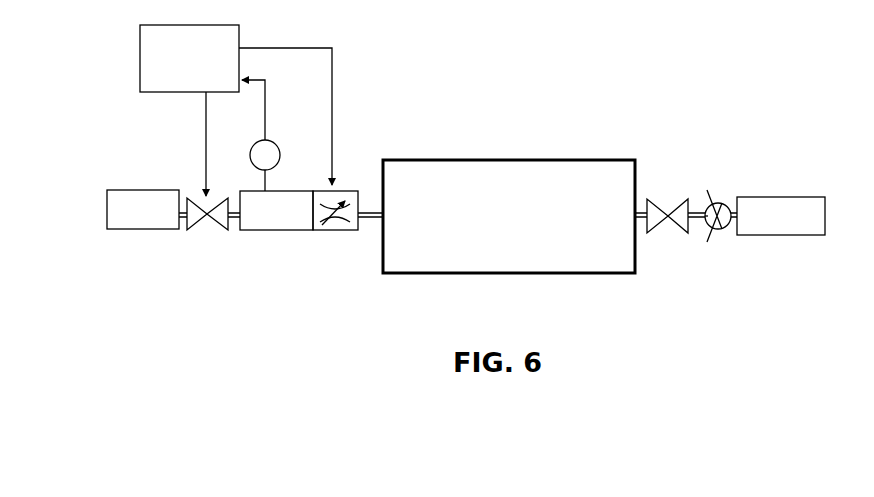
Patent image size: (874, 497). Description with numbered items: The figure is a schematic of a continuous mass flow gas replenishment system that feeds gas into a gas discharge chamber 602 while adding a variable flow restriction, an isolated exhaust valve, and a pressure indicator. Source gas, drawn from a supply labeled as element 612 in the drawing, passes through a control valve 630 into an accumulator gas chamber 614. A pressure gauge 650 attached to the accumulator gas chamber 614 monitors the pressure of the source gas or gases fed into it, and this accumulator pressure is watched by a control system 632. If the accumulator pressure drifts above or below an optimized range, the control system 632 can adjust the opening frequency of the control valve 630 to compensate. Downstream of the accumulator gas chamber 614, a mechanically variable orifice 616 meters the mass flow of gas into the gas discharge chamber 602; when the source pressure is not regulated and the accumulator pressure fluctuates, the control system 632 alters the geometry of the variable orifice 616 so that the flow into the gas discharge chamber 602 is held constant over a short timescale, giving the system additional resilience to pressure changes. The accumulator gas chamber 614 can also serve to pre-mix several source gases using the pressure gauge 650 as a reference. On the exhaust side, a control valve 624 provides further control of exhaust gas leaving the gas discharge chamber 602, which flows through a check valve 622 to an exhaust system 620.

The gas discharge chamber 602 is at (476, 160).
The gas source 612 is at (136, 190).
The accumulator gas chamber 614 is at (301, 190).
The mechanically variable orifice 616 is at (352, 190).
The exhaust system 620 is at (782, 197).
The check valve 622 is at (722, 201).
The control valve (exhaust side) 624 is at (672, 198).
The control valve 630 is at (190, 231).
The control system 632 is at (140, 58).
The pressure gauge 650 is at (277, 145).